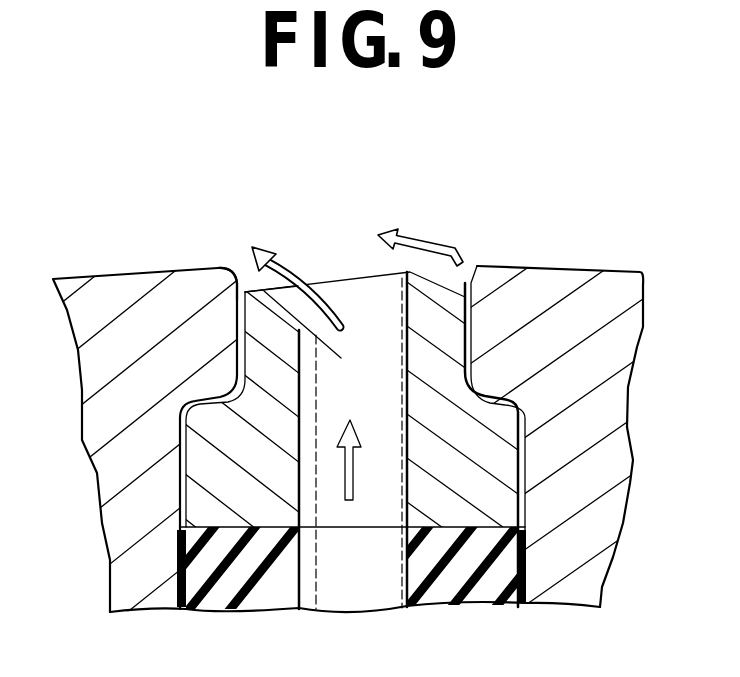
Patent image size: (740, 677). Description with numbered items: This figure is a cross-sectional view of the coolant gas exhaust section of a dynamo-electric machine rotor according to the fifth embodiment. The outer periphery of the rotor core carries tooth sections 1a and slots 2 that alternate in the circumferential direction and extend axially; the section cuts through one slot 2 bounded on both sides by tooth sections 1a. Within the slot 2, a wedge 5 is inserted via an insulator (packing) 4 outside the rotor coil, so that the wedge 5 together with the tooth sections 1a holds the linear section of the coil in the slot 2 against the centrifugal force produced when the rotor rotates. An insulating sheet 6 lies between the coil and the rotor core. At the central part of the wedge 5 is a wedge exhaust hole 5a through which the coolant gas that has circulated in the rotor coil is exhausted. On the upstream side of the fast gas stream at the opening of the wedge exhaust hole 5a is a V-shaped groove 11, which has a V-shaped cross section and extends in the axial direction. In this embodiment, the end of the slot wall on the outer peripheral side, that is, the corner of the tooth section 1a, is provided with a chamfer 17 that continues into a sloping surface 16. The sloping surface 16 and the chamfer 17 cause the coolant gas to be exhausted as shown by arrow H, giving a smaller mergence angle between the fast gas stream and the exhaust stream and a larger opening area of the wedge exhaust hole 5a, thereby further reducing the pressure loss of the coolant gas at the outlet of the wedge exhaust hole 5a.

The tooth section 1a is at (163, 312).
The slot 2 is at (470, 328).
The insulator (packing) 4 is at (467, 557).
The wedge 5 is at (497, 461).
The wedge exhaust hole 5a is at (377, 483).
The insulating sheet 6 is at (173, 570).
The V-shaped groove 11 is at (464, 281).
The sloping surface 16 is at (266, 305).
The chamfer 17 is at (233, 280).
The arrow H (coolant gas exhaust flow) H is at (300, 254).